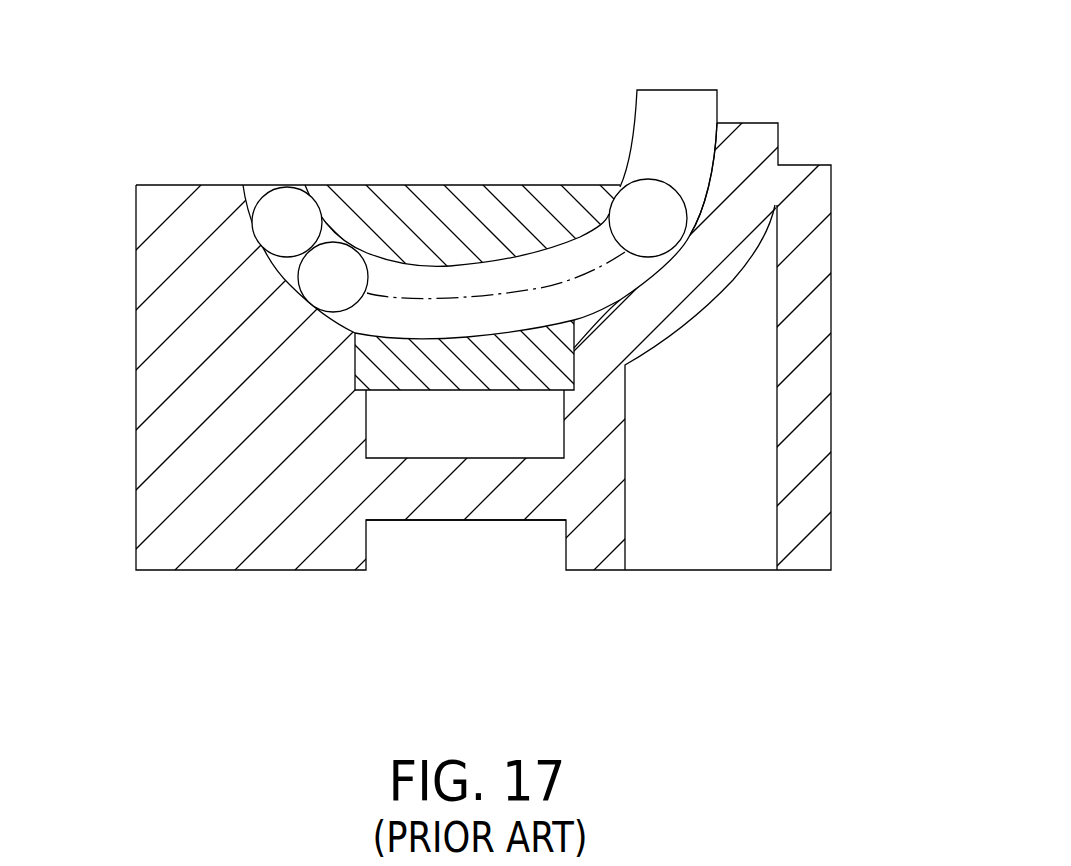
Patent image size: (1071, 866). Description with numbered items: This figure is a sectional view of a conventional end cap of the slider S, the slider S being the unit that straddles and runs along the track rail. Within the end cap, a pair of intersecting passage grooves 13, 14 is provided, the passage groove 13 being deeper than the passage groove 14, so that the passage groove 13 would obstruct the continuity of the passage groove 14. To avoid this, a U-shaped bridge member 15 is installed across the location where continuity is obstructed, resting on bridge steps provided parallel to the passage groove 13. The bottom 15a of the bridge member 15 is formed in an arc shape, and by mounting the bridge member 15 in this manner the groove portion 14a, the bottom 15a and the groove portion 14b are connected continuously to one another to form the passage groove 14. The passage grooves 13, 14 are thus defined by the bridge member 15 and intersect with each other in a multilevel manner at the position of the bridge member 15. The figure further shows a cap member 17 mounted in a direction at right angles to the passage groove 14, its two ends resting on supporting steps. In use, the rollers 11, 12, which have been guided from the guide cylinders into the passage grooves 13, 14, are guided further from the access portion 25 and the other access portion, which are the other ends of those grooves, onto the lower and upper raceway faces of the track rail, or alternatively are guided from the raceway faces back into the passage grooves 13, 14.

The roller 11 is at (652, 192).
The roller 12 is at (402, 443).
The passage groove 13 is at (456, 442).
The passage groove 14 is at (730, 155).
The groove portion 14a is at (697, 208).
The groove portion 14b is at (288, 272).
The bridge member 15 is at (525, 398).
The bottom 15a is at (460, 335).
The cap member 17 is at (380, 203).
The access portion 25 is at (257, 192).
The slider S is at (840, 347).